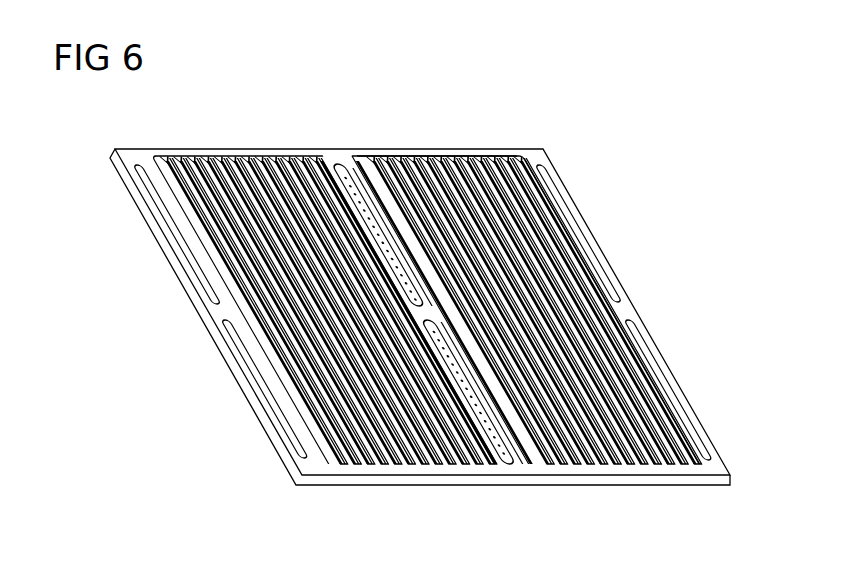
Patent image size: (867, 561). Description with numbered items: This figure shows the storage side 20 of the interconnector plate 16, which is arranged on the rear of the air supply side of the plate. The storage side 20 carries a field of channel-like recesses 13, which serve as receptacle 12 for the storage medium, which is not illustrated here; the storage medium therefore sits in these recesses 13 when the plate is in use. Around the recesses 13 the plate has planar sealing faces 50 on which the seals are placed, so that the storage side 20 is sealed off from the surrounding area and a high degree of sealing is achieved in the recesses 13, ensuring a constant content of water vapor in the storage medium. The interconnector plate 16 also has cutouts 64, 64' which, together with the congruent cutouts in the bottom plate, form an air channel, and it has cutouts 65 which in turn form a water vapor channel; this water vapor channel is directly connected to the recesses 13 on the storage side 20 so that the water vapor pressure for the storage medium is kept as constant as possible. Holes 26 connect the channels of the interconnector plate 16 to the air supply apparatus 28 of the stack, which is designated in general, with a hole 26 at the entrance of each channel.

The interconnector plate 16 is at (522, 142).
The receptacle 12 is at (228, 185).
The recesses 13 is at (228, 185).
The storage side 20 is at (248, 299).
The holes 26 is at (359, 192).
The air supply apparatus 28 is at (165, 217).
The cutouts 64 is at (623, 312).
The cutouts 64' is at (366, 198).
The cutouts 65 is at (435, 151).
The planar sealing faces 50 is at (500, 458).